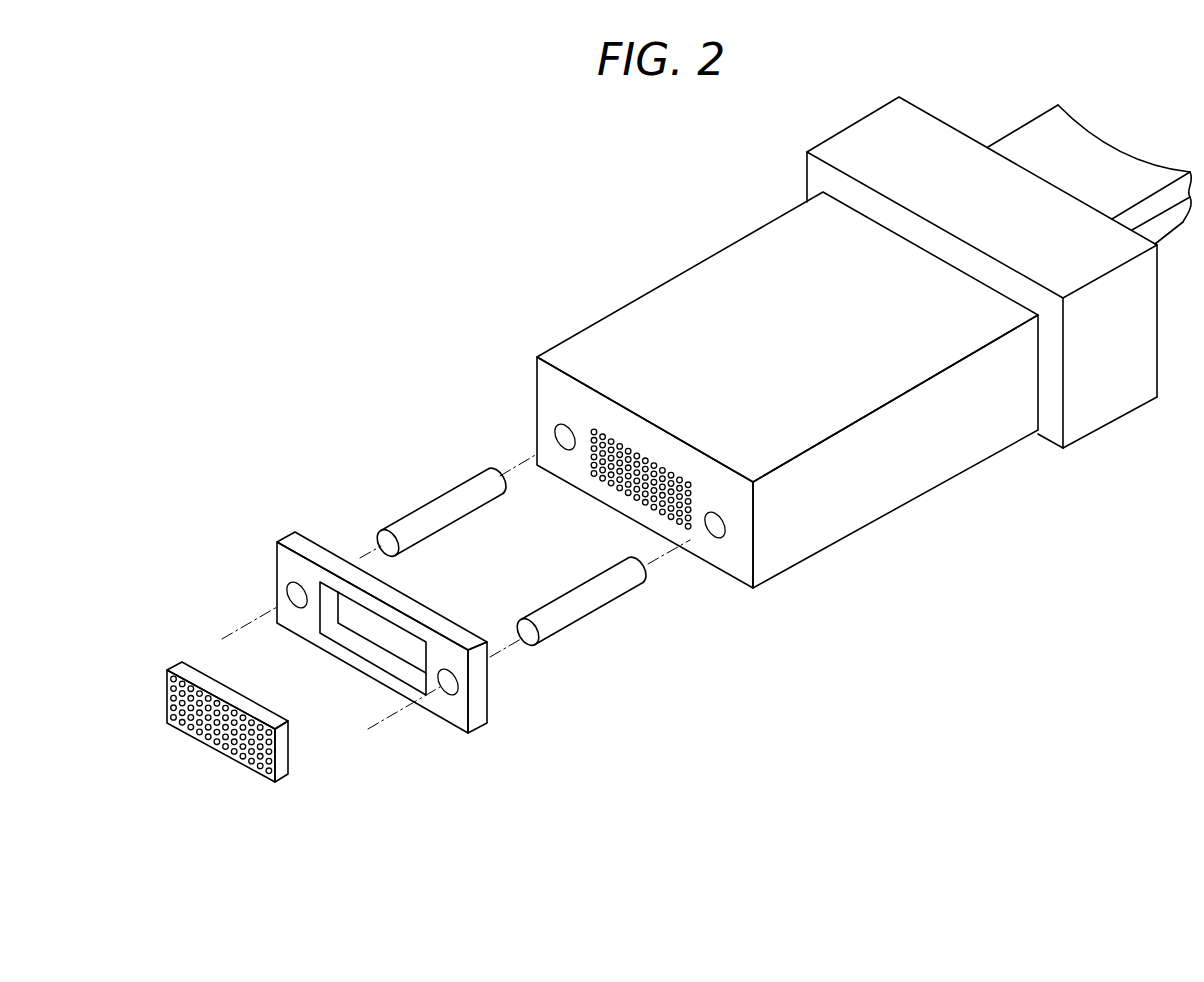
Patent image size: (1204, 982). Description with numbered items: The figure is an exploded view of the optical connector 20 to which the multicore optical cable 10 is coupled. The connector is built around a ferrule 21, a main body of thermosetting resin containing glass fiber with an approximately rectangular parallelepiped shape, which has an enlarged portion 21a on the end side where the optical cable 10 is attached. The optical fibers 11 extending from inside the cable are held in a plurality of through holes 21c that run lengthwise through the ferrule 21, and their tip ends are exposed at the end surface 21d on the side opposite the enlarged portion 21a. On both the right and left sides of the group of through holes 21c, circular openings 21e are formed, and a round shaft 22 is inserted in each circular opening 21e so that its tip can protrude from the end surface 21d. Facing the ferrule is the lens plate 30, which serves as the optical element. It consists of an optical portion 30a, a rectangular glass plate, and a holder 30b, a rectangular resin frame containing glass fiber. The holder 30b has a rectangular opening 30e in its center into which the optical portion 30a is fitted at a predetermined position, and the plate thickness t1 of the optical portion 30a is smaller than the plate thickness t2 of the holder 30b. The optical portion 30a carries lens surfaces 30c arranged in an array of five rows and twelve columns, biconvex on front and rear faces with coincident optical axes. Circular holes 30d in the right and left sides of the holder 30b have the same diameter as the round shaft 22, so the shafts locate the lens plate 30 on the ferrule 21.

The optical cable 10 is at (1107, 167).
The optical connector 20 is at (612, 292).
The ferrule 21 is at (736, 413).
The enlarged portion 21a is at (1108, 402).
The through holes 21c is at (627, 457).
The end surface 21d is at (548, 398).
The circular openings 21e is at (563, 440).
The optical fibers 11 is at (630, 455).
The round shaft 22 is at (460, 517).
The lens plate 30 is at (485, 803).
The optical portion 30a is at (272, 736).
The holder 30b is at (389, 670).
The lens surfaces 30c is at (210, 748).
The circular holes 30d is at (292, 600).
The rectangular opening 30e is at (347, 640).
The plate thickness of the optical portion t1 is at (208, 605).
The plate thickness of the holder t2 is at (325, 477).